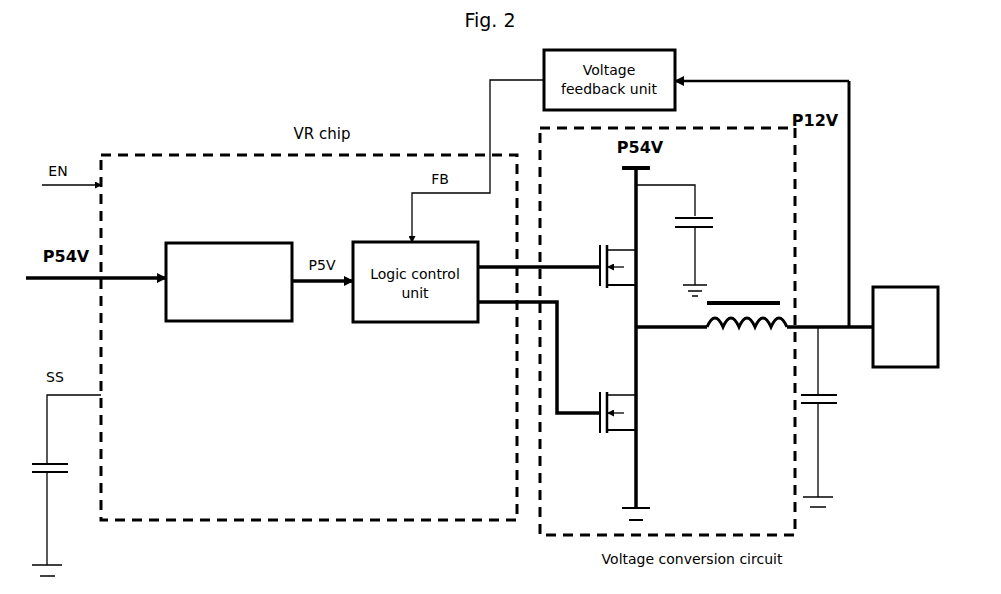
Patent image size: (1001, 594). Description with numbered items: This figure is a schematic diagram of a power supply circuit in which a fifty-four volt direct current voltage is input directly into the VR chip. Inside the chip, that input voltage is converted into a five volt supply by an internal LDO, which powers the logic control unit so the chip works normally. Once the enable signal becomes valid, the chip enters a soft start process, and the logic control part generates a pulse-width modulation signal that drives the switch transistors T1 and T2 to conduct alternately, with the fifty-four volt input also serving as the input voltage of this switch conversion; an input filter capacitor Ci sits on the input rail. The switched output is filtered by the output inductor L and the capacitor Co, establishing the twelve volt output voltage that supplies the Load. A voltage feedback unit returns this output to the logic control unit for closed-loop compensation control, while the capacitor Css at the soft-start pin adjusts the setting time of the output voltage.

The internal LDO is at (229, 282).
The switch transistor T1 is at (557, 260).
The switch transistor T2 is at (557, 367).
The filter capacitor Ci is at (690, 240).
The capacitor Co is at (838, 417).
The output inductor L is at (754, 303).
The capacitor Css is at (66, 485).
The load Load is at (905, 327).